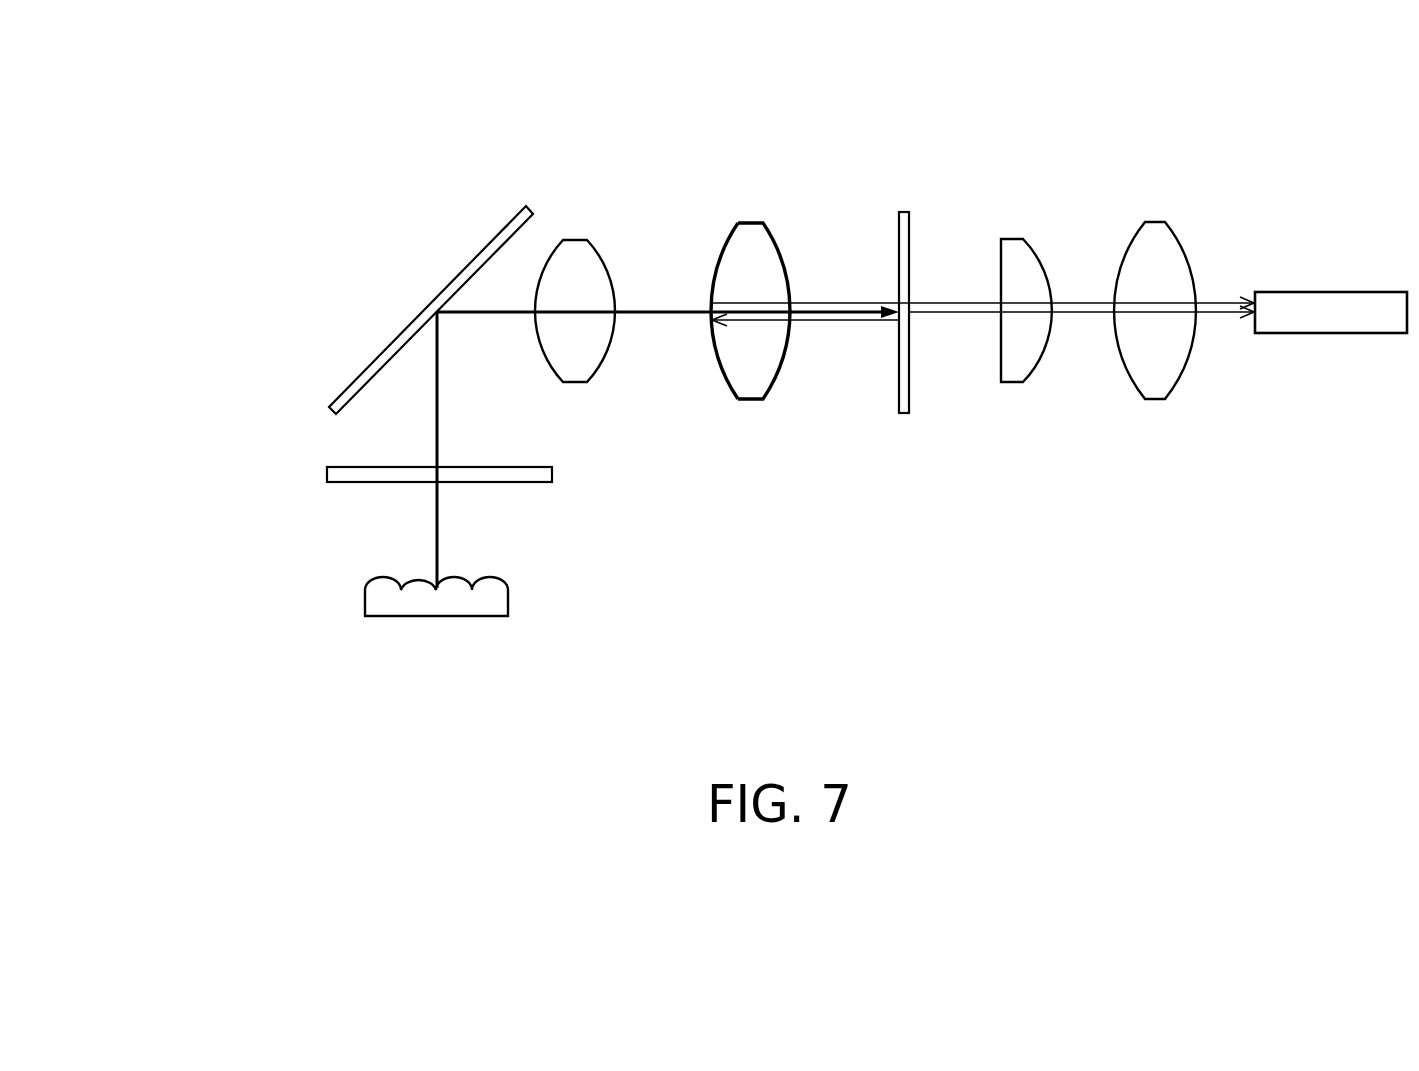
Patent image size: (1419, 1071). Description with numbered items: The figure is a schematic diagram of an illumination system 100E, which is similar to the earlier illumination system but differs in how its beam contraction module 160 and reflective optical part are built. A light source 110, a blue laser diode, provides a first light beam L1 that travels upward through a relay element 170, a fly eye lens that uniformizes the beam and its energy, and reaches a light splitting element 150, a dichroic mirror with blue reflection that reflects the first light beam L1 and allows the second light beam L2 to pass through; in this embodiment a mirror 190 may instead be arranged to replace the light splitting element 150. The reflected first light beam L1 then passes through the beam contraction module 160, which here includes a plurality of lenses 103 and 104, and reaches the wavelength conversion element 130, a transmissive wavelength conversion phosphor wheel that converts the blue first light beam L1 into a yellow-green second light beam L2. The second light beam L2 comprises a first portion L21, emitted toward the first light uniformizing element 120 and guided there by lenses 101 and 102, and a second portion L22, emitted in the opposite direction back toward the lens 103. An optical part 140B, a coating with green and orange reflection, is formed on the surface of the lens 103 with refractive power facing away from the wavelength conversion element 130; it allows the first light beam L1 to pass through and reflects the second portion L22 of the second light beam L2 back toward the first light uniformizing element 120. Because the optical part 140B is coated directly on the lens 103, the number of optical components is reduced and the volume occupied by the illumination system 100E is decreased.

The illumination system 100E is at (1348, 713).
The lens 101 is at (1156, 221).
The lens 102 is at (1015, 238).
The lens 103 is at (708, 272).
The lens 104 is at (578, 239).
The light source 110 is at (508, 602).
The first light uniformizing element 120 is at (1335, 291).
The wavelength conversion element 130 is at (905, 211).
The optical part 140B is at (723, 241).
The light splitting element 150 is at (436, 267).
The mirror 190 is at (529, 206).
The beam contraction module 160 is at (705, 151).
The relay element 170 is at (553, 474).
The first light beam L1 is at (670, 316).
The second light beam L2 is at (180, 52).
The first portion L21 is at (1078, 316).
The second portion L22 is at (818, 301).